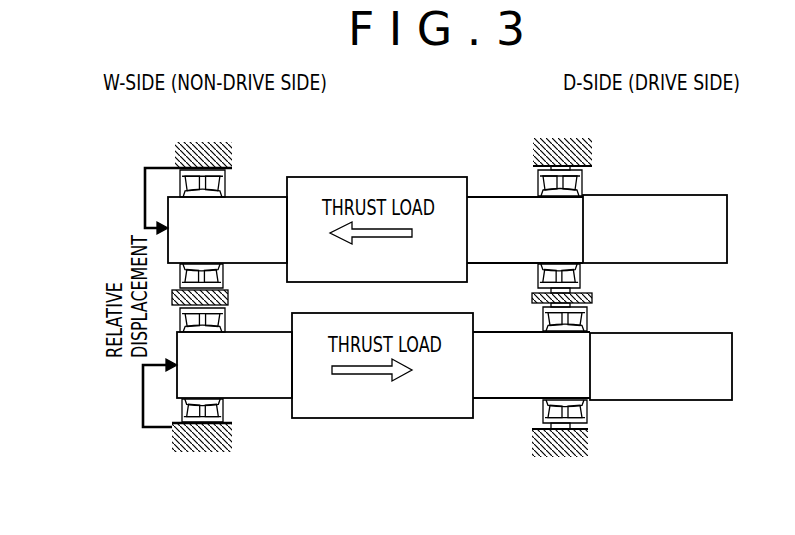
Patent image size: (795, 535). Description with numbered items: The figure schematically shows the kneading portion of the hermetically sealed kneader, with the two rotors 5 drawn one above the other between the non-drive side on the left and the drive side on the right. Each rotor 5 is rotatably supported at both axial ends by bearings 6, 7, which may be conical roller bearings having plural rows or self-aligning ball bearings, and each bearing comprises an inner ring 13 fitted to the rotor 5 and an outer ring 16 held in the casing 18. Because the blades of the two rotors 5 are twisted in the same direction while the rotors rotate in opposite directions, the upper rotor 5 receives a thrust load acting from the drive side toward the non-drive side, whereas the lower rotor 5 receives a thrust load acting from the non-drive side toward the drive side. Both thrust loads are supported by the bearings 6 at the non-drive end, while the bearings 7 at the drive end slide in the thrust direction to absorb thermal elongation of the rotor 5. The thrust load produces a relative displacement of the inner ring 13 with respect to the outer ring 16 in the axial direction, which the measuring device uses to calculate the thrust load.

The rotor 5 is at (717, 234).
The bearing 6 is at (246, 172).
The bearing 7 is at (525, 162).
The inner ring 13 is at (227, 195).
The outer ring 16 is at (235, 175).
The casing 18 is at (175, 150).